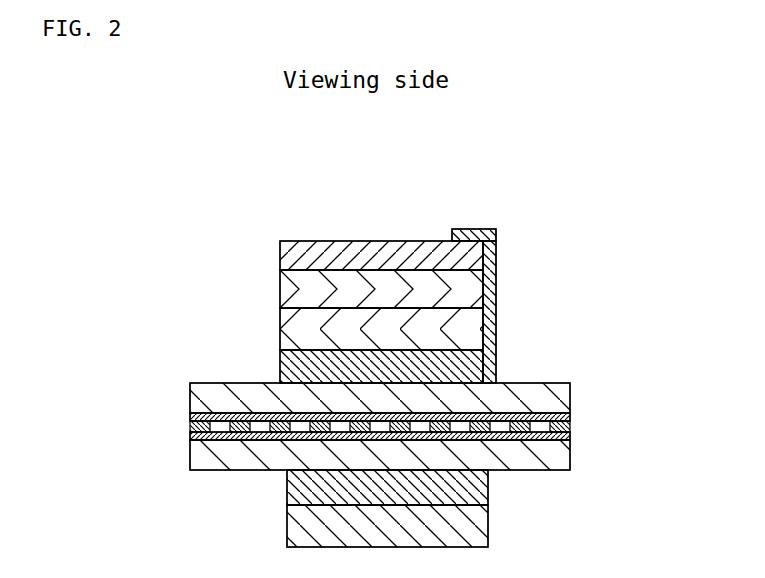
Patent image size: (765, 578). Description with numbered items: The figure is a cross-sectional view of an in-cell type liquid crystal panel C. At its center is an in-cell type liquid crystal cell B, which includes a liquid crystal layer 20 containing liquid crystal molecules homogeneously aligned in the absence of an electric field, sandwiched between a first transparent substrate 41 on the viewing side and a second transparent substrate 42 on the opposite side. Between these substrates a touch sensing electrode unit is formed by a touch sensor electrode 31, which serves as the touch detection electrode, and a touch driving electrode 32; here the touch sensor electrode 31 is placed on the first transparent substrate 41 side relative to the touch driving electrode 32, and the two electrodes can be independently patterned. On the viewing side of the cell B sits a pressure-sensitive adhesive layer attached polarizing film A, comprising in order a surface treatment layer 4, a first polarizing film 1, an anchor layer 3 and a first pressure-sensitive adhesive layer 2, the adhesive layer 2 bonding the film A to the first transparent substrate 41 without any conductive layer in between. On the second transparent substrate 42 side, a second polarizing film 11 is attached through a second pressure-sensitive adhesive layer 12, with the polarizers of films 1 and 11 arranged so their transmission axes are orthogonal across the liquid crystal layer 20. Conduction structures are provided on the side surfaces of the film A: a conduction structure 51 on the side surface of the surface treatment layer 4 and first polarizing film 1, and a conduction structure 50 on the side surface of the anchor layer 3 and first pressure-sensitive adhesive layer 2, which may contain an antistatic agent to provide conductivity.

The in-cell type liquid crystal panel C is at (388, 220).
The pressure-sensitive adhesive layer attached polarizing film A is at (218, 230).
The surface treatment layer 4 is at (287, 252).
The first polarizing film 1 is at (287, 290).
The anchor layer 3 is at (287, 330).
The first pressure-sensitive adhesive layer 2 is at (286, 365).
The conduction structure 51 is at (496, 233).
The conduction structure 50 is at (496, 337).
The first transparent substrate 41 is at (565, 400).
The in-cell type liquid crystal cell B is at (114, 392).
The touch sensor electrode 31 is at (190, 417).
The liquid crystal layer 20 is at (568, 436).
The touch driving electrode 32 is at (190, 434).
The second transparent substrate 42 is at (562, 456).
The second pressure-sensitive adhesive layer 12 is at (297, 487).
The second polarizing film 11 is at (297, 524).